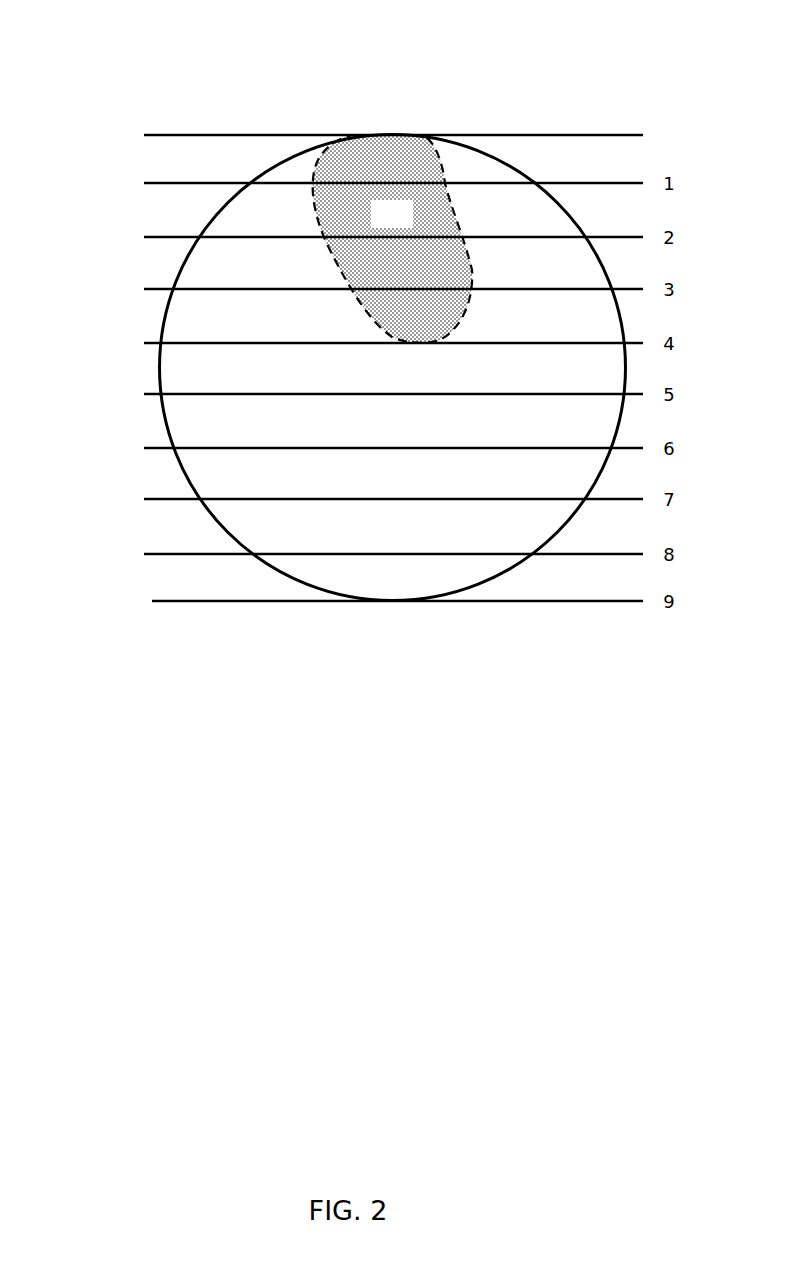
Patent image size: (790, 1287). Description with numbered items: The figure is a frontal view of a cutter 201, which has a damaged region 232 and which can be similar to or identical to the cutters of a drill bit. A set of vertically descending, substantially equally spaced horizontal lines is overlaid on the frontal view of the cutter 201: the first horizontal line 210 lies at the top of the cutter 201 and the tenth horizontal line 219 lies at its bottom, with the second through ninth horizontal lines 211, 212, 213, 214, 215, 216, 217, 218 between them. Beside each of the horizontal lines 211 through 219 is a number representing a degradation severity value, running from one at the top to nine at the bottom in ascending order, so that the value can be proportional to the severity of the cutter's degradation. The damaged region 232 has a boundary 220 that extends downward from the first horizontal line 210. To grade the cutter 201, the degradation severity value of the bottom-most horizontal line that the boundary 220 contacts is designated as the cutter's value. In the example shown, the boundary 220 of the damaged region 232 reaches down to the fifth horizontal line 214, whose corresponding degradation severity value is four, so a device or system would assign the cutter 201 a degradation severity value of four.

The cutter 201 is at (263, 174).
The first horizontal line 210 is at (144, 135).
The second horizontal line 211 is at (144, 183).
The third horizontal line 212 is at (144, 237).
The fourth horizontal line 213 is at (144, 289).
The fifth horizontal line 214 is at (144, 343).
The sixth horizontal line 215 is at (144, 394).
The seventh horizontal line 216 is at (144, 448).
The eighth horizontal line 217 is at (144, 499).
The ninth horizontal line 218 is at (144, 554).
The tenth horizontal line 219 is at (152, 601).
The boundary 220 is at (442, 175).
The damaged region 232 is at (375, 224).